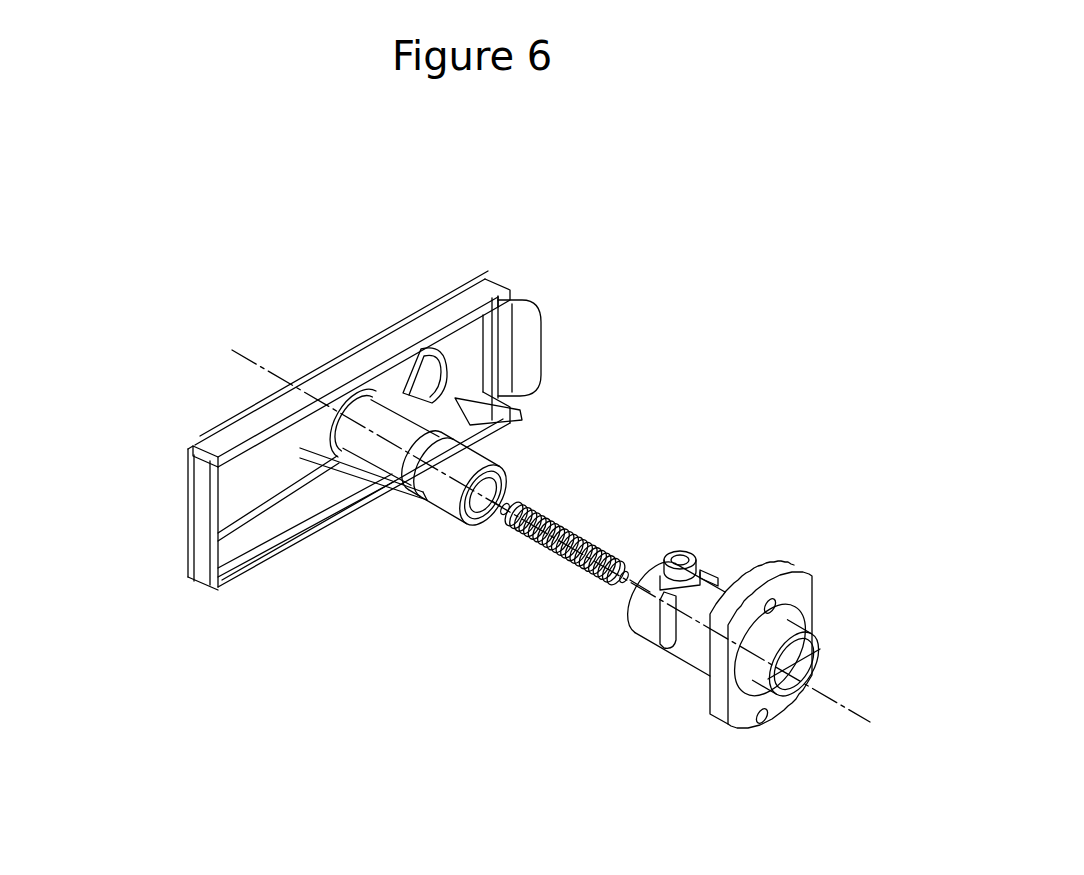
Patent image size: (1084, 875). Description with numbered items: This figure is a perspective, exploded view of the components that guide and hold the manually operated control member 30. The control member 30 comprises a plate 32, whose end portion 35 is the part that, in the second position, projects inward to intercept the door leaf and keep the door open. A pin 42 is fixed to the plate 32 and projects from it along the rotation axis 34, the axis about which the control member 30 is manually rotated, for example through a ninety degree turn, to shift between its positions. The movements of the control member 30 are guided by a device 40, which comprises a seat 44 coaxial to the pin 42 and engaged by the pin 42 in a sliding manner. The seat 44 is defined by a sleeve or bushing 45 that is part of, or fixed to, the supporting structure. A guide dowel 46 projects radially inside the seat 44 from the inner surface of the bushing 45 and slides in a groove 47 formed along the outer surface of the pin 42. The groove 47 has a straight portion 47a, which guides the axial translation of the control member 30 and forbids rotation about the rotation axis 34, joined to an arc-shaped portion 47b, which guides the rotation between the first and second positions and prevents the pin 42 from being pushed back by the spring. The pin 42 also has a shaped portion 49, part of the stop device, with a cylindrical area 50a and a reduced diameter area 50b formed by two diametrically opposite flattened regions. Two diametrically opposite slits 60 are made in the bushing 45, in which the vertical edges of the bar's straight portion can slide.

The control member 30 is at (348, 415).
The plate 32 is at (375, 355).
The rotation axis 34 is at (262, 362).
The end portion 35 is at (197, 500).
The device 40 is at (437, 517).
The pin 42 is at (508, 456).
The seat 44 is at (833, 682).
The sleeve or bushing 45 is at (740, 590).
The guide dowel 46 is at (688, 613).
The groove 47 is at (377, 476).
The straight portion 47a is at (343, 472).
The arc-shaped portion 47b is at (500, 433).
The shaped portion 49 is at (445, 513).
The cylindrical area 50a is at (482, 512).
The reduced diameter area 50b is at (427, 470).
The slits 60 is at (718, 566).